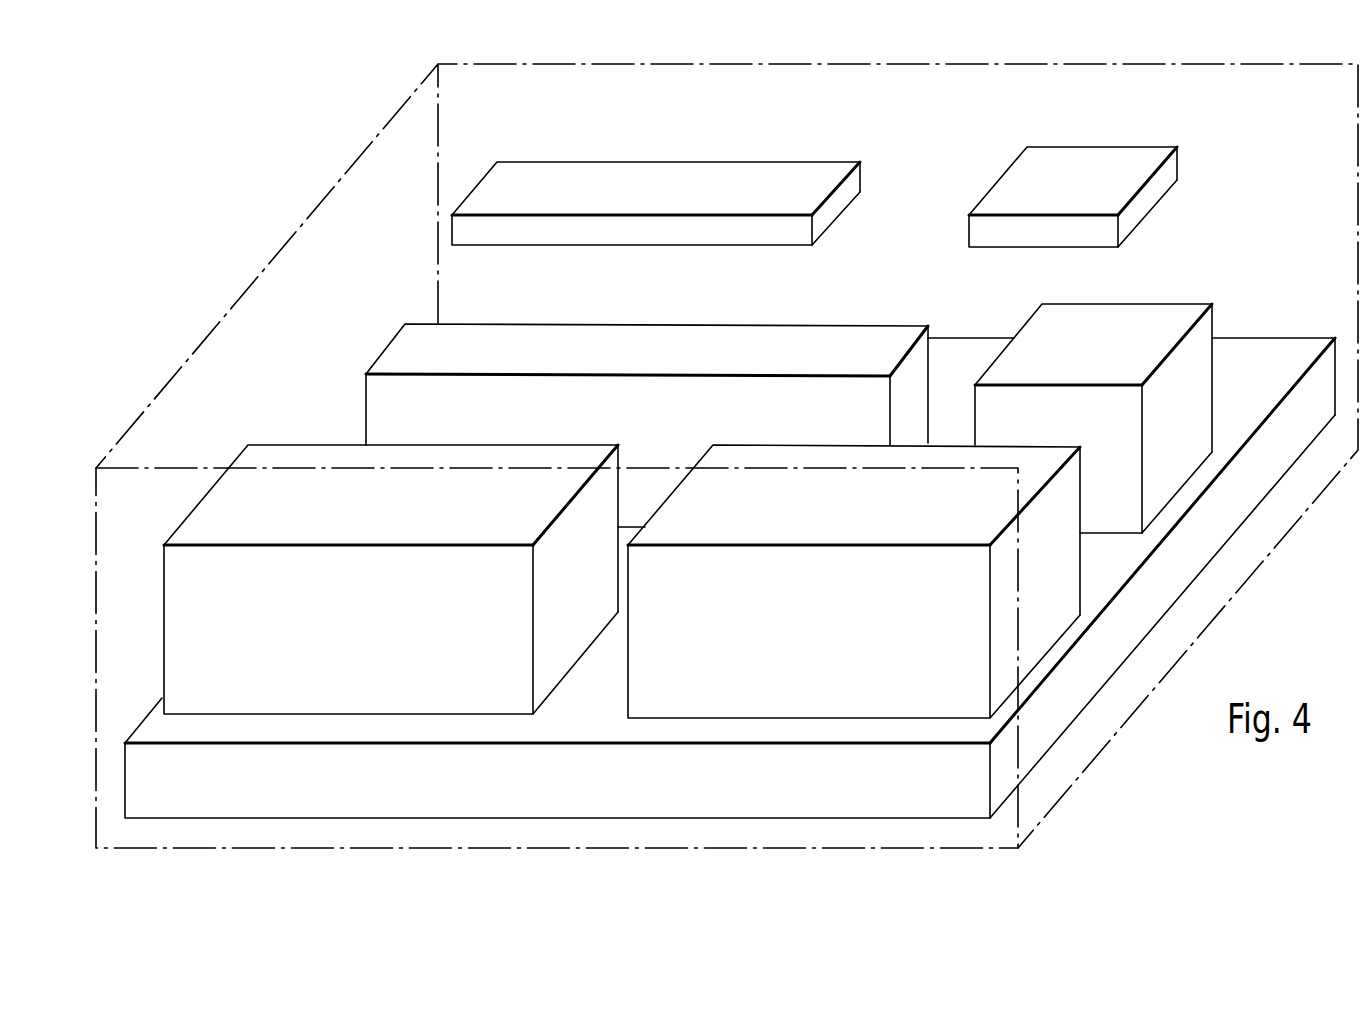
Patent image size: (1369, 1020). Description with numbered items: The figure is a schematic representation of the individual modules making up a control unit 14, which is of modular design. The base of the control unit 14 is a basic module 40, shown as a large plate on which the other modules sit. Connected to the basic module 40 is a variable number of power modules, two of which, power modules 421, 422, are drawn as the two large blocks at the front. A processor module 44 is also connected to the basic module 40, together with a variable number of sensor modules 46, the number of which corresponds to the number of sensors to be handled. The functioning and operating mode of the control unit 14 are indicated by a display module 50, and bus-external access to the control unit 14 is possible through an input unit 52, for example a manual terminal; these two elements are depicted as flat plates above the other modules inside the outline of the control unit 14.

The control unit 14 is at (1182, 627).
The basic module 40 is at (887, 790).
The power module 421 is at (287, 492).
The power module 422 is at (742, 703).
The processor module 44 is at (1202, 413).
The sensor module 46 is at (398, 348).
The display module 50 is at (577, 187).
The input unit 52 is at (1087, 167).